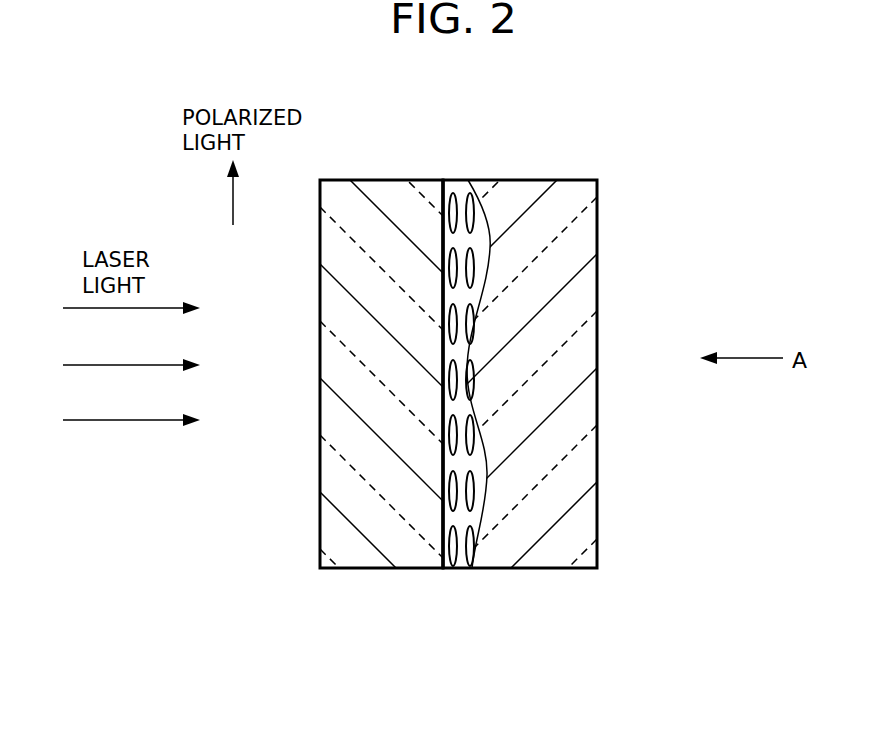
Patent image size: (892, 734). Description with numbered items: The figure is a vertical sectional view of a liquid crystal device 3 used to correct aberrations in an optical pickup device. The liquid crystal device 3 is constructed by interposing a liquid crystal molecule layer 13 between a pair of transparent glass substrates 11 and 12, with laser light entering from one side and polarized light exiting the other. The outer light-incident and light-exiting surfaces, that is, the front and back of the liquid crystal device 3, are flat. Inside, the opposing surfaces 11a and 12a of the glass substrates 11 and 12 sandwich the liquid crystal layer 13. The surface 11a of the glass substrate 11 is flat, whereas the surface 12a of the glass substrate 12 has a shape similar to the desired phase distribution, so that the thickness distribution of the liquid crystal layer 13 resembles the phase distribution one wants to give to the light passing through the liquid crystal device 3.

The liquid crystal device 3 is at (631, 236).
The glass substrate 11 is at (383, 186).
The glass substrate 12 is at (533, 186).
The liquid crystal molecule layer 13 is at (474, 518).
The surface of glass substrate 11a is at (443, 487).
The surface of glass substrate 12a is at (490, 473).